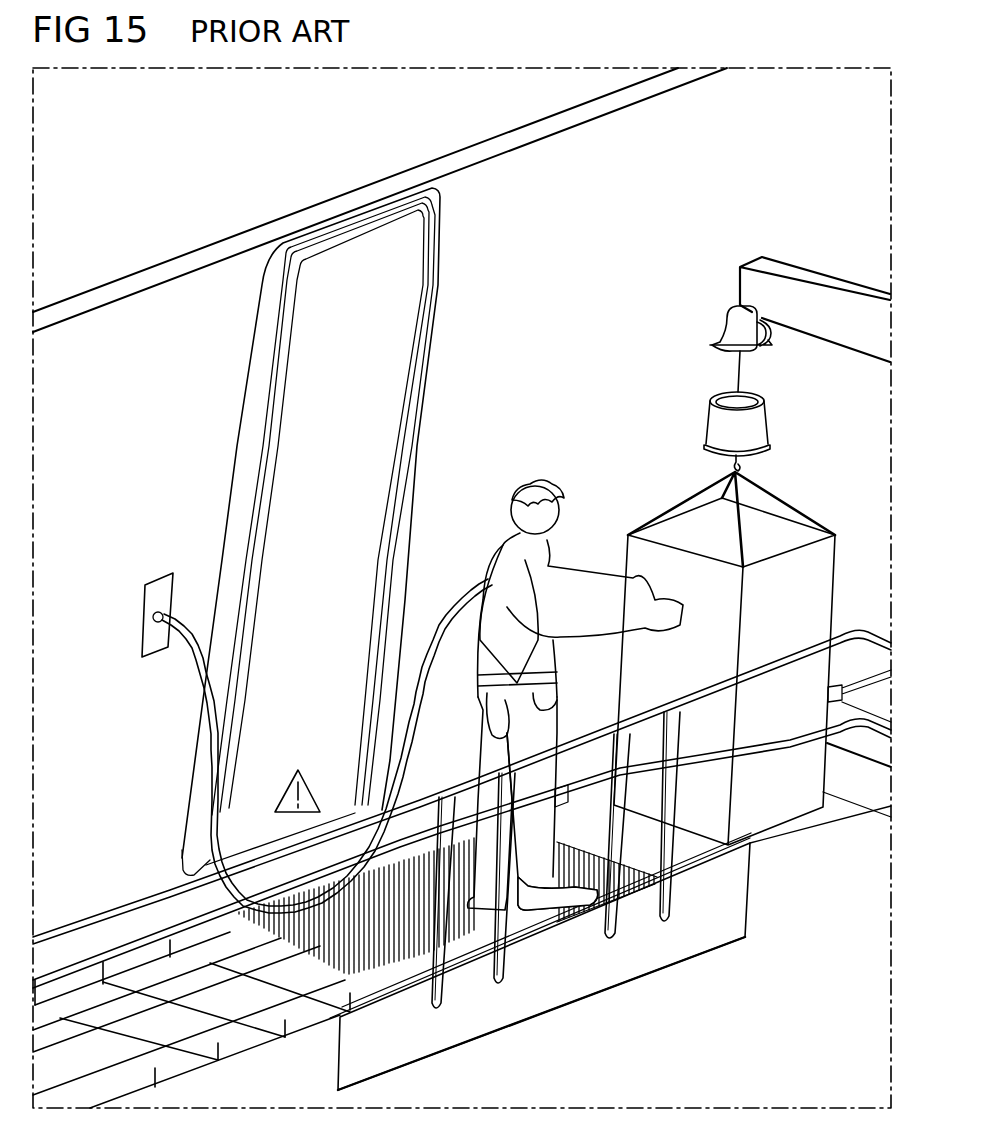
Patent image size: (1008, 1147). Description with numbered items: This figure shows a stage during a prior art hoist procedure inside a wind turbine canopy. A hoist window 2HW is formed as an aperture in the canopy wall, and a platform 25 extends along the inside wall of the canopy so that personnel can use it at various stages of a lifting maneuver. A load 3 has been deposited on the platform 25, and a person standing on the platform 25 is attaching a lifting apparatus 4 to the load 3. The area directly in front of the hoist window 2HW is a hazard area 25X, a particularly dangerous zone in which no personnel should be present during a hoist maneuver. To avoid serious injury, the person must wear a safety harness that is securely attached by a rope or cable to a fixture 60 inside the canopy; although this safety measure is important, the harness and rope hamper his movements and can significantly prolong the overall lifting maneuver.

The lifting apparatus 4 is at (808, 284).
The load 3 is at (821, 573).
The fixture 60 is at (160, 591).
The platform 25 is at (773, 840).
The hazard area 25X is at (473, 932).
The hoist window 2HW is at (366, 467).